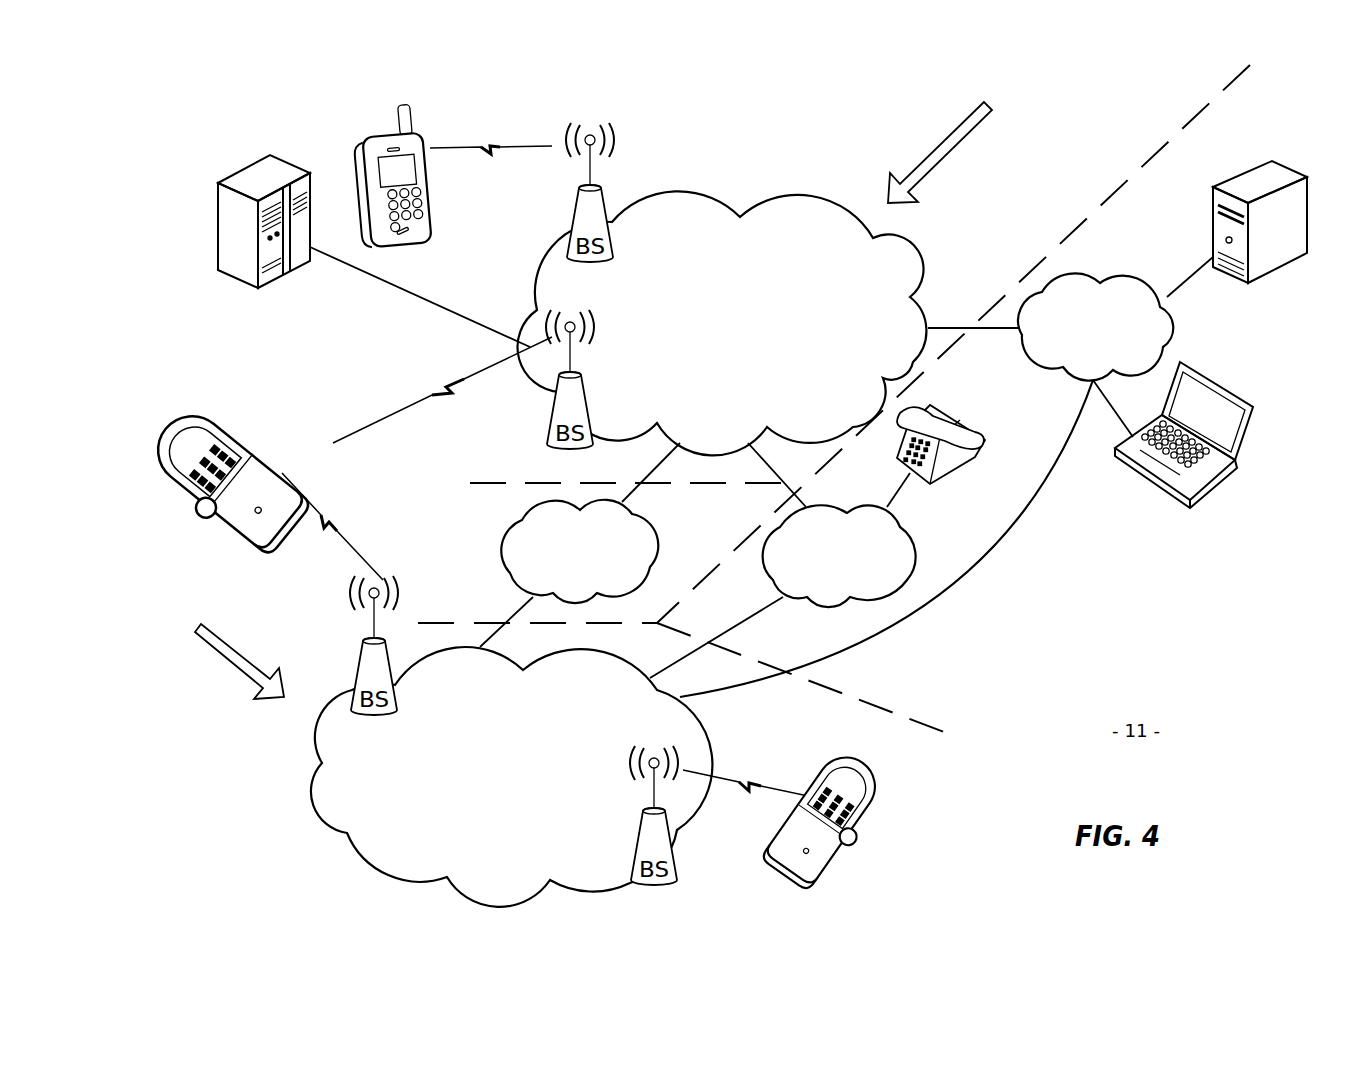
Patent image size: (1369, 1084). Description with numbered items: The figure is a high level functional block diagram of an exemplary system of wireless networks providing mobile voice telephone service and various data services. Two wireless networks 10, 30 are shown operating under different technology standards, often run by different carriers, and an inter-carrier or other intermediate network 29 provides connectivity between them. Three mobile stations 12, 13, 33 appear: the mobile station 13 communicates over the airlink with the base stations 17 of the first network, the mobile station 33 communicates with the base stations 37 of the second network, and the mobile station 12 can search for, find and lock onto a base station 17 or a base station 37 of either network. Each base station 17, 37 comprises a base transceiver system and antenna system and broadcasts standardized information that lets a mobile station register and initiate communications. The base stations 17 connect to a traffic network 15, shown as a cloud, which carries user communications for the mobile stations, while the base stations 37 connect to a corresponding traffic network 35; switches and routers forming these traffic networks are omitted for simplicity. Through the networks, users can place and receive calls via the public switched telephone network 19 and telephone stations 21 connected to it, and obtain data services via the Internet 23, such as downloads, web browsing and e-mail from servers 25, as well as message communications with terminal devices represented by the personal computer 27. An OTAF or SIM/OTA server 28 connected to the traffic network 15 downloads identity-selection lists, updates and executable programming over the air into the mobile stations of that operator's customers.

The wireless network 10 is at (953, 142).
The mobile station 12 is at (232, 454).
The mobile station 13 is at (358, 160).
The traffic network 15 is at (917, 272).
The base station 17 is at (580, 208).
The public switched telephone network 19 is at (922, 540).
The telephone station 21 is at (962, 460).
The Internet 23 is at (1181, 340).
The server 25 is at (1210, 237).
The personal computer 27 is at (1148, 487).
The OTAF or SIM/OTA server 28 is at (218, 236).
The intermediate network 29 is at (660, 547).
The wireless network 30 is at (228, 651).
The mobile station 33 is at (900, 796).
The traffic network 35 is at (704, 725).
The base station 37 is at (355, 660).